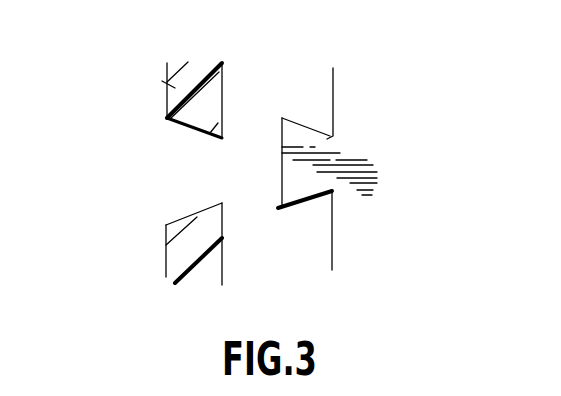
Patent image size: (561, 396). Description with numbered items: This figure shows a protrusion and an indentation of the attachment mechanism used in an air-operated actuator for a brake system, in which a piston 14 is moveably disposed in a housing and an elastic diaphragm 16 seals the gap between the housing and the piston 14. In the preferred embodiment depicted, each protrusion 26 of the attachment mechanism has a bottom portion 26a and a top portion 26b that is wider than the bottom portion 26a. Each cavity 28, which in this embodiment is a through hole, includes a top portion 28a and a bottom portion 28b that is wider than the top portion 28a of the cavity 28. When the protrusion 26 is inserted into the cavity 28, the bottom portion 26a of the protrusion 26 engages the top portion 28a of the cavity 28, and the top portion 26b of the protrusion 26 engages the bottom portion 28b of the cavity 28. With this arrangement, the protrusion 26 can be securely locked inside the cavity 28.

The piston 14 is at (352, 102).
The elastic diaphragm 16 is at (167, 82).
The protrusion 26 is at (342, 166).
The bottom portion of the protrusion 26a is at (327, 142).
The top portion of the protrusion 26b is at (288, 189).
The cavity 28 is at (164, 150).
The top portion of the cavity 28a is at (212, 165).
The bottom portion of the cavity 28b is at (172, 215).